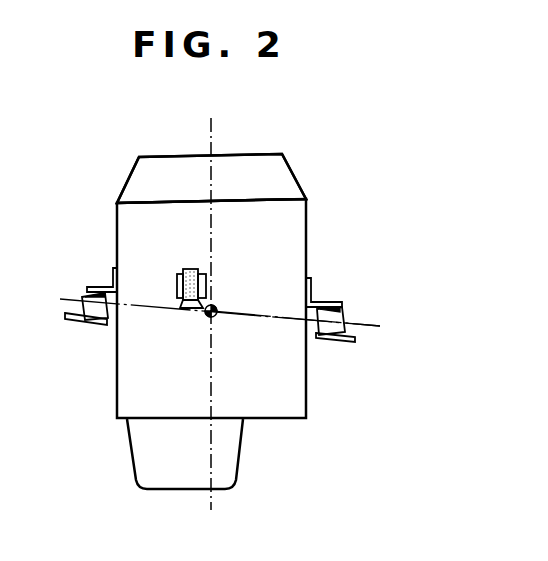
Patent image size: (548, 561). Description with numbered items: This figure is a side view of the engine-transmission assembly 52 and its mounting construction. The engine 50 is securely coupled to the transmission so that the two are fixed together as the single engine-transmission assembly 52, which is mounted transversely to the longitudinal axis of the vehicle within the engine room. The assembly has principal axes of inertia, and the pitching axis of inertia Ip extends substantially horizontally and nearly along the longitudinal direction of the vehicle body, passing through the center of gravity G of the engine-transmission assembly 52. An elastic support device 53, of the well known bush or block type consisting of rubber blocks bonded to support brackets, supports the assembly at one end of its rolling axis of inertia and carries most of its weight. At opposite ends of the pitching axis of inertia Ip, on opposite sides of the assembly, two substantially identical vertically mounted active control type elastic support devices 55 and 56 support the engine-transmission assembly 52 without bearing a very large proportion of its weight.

The engine 50 is at (151, 212).
The engine-transmission assembly 52 is at (265, 151).
The elastic support device 53 is at (189, 272).
The center of gravity G is at (207, 316).
The pitching axis of inertia Ip is at (240, 310).
The elastic support device 55 is at (338, 315).
The elastic support device 56 is at (92, 308).